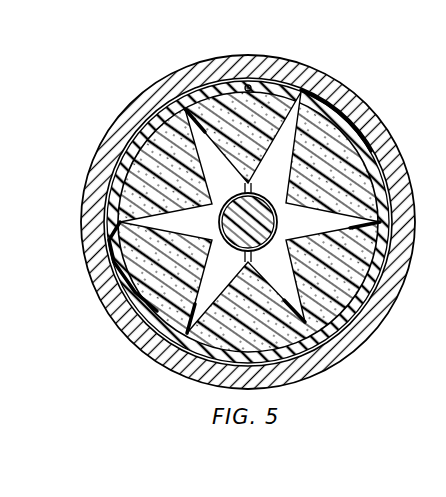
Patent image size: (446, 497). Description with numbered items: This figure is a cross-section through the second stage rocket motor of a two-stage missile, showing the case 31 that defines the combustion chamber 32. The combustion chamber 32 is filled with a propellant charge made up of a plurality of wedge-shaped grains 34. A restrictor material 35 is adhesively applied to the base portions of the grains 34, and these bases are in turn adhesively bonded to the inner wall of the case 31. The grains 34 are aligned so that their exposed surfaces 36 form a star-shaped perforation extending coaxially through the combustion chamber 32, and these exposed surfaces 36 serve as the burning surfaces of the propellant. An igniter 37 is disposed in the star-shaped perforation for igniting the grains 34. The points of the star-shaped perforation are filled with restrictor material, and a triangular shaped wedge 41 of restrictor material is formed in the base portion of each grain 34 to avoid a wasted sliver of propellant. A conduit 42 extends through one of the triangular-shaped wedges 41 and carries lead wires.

The case 31 is at (399, 151).
The combustion chamber 32 is at (304, 231).
The wedge-shaped grains 34 is at (366, 101).
The restrictor material 35 is at (334, 75).
The exposed surfaces 36 is at (243, 176).
The igniter 37 is at (260, 193).
The triangular shaped wedge 41 is at (390, 131).
The conduit 42 is at (288, 58).